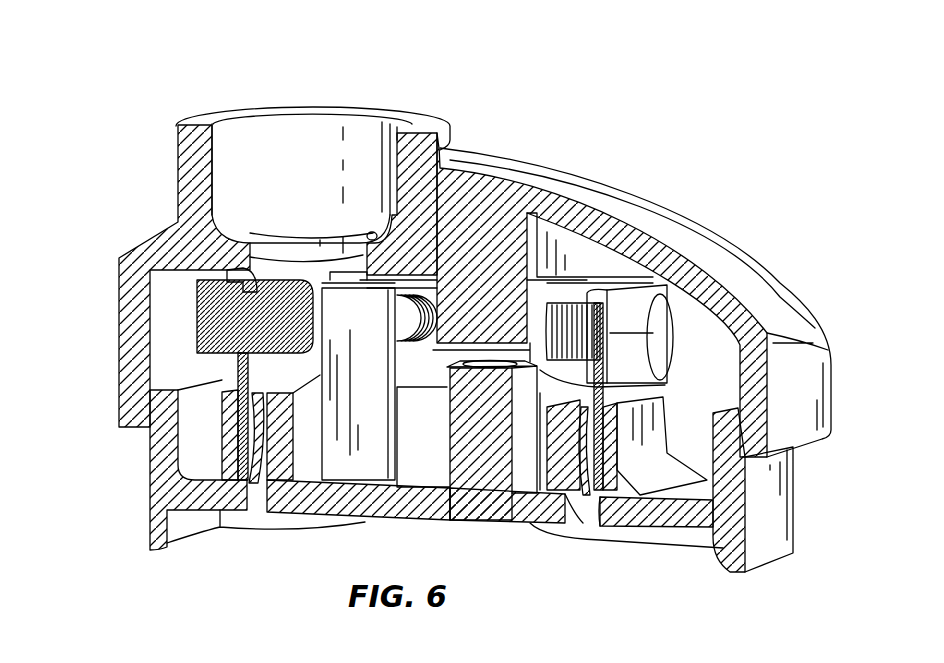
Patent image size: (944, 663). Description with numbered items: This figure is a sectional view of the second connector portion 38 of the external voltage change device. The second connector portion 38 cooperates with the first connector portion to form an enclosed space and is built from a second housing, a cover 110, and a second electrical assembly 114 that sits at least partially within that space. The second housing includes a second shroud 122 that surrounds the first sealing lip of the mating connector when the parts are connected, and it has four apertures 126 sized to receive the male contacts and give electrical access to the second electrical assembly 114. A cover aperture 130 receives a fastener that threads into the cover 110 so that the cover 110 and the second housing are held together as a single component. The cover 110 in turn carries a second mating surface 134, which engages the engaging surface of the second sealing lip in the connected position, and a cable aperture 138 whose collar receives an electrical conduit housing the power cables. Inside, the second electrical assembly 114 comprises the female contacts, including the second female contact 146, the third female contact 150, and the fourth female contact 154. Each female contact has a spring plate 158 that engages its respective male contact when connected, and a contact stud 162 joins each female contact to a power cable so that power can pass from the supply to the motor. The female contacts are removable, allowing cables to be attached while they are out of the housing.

The second connector portion 38 is at (770, 60).
The cover 110 is at (530, 170).
The second electrical assembly 114 is at (581, 285).
The second shroud 122 is at (743, 562).
The apertures 126 is at (255, 497).
The cover aperture 130 is at (472, 441).
The second mating surface 134 is at (133, 430).
The cable aperture 138 is at (235, 158).
The second female contact 146 is at (190, 360).
The third female contact 150 is at (423, 413).
The fourth female contact 154 is at (613, 398).
The spring plate 158 is at (258, 420).
The contact stud 162 is at (213, 308).